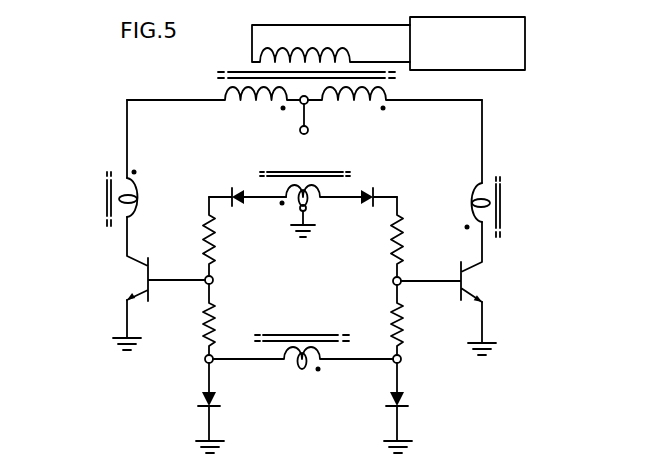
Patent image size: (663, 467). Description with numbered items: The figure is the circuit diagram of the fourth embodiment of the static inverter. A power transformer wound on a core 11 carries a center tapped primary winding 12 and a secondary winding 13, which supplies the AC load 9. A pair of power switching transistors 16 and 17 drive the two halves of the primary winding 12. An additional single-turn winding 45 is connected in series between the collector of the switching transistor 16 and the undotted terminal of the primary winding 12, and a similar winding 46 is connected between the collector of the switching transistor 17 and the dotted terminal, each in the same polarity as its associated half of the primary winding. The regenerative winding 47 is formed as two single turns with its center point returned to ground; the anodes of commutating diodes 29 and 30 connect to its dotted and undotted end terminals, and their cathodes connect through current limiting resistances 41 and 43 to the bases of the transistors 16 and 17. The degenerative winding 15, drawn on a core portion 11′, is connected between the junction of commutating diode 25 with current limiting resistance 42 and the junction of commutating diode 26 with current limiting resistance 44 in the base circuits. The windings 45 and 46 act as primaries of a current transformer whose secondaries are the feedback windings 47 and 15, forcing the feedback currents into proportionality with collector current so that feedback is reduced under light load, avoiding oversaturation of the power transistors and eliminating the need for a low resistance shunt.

The AC load 9 is at (526, 36).
The core 11 is at (241, 70).
The transformer core 11′ is at (290, 335).
The center tapped primary winding 12 is at (252, 105).
The secondary winding 13 is at (348, 50).
The degenerative winding 15 is at (303, 372).
The power switching transistor 16 is at (137, 277).
The power switching transistor 17 is at (475, 283).
The commutating diode 25 is at (205, 392).
The commutating diode 26 is at (410, 398).
The commutating diode 29 is at (236, 188).
The commutating diode 30 is at (368, 186).
The current limiting resistance 41 is at (214, 240).
The current limiting resistance 42 is at (201, 320).
The current limiting resistance 43 is at (392, 240).
The current limiting resistance 44 is at (405, 322).
The additional winding 45 is at (136, 202).
The additional winding 46 is at (468, 200).
The regenerative winding 47 is at (313, 201).